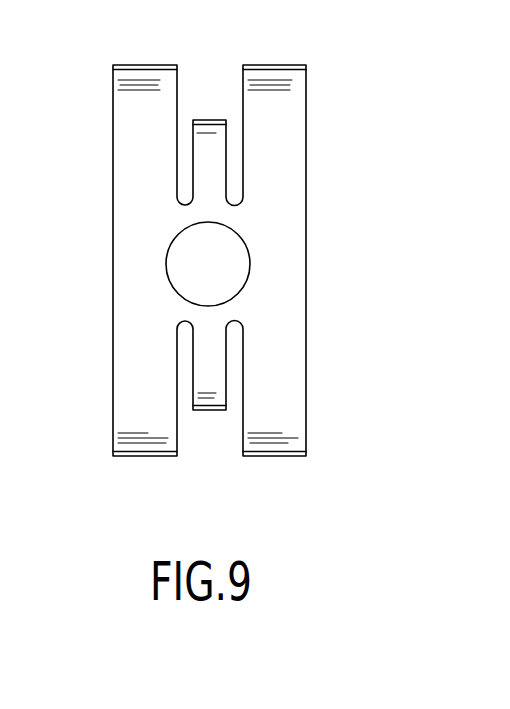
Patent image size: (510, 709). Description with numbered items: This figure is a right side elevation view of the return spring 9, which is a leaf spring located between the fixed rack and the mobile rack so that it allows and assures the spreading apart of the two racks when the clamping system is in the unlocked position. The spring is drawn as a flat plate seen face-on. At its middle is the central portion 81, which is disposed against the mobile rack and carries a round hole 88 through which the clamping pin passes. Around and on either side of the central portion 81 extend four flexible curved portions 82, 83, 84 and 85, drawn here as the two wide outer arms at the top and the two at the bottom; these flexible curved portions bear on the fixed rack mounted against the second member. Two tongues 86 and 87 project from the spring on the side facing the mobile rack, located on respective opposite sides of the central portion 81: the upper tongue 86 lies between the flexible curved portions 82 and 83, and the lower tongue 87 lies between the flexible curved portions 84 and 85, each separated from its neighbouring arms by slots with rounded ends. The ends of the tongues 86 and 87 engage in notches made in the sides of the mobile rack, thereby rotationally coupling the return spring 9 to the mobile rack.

The return spring 9 is at (310, 190).
The central portion 81 is at (275, 299).
The flexible curved portion 82 is at (280, 72).
The flexible curved portion 83 is at (142, 70).
The flexible curved portion 84 is at (273, 455).
The flexible curved portion 85 is at (137, 450).
The tongue 86 is at (210, 122).
The tongue 87 is at (205, 408).
The hole 88 is at (168, 262).